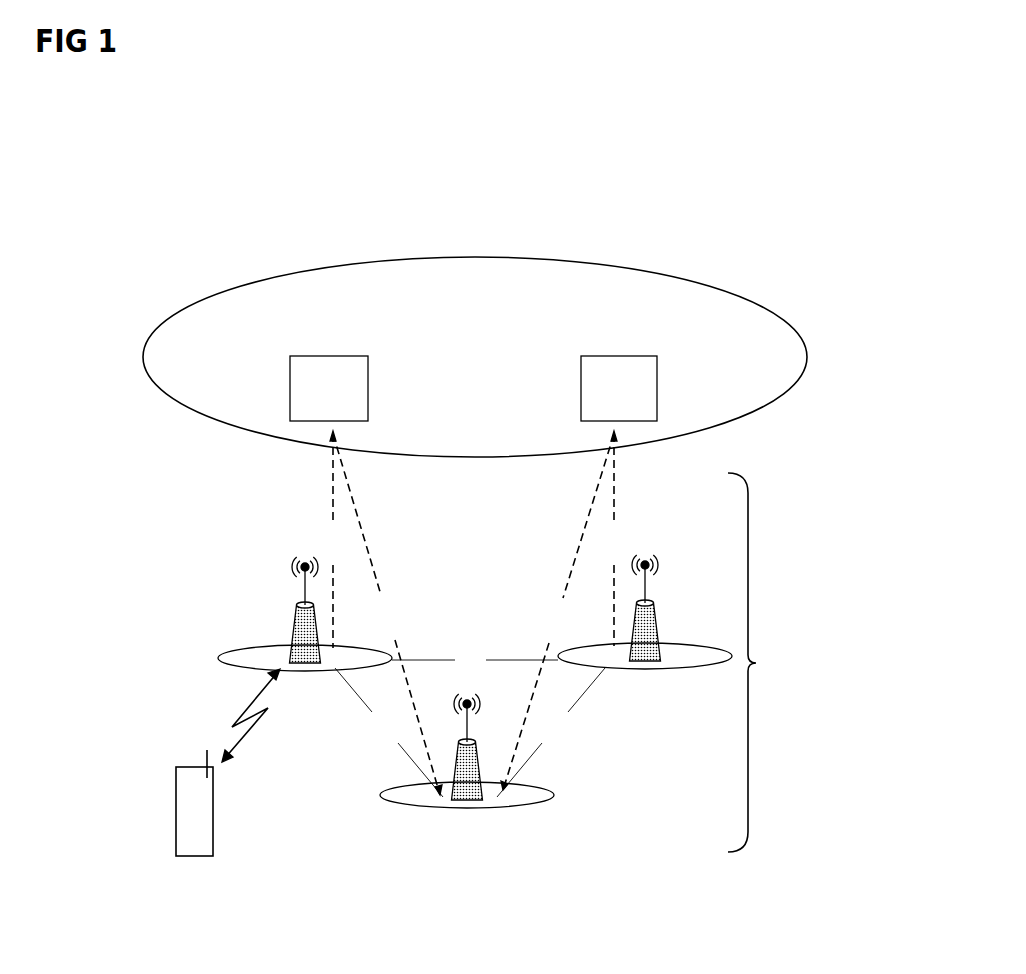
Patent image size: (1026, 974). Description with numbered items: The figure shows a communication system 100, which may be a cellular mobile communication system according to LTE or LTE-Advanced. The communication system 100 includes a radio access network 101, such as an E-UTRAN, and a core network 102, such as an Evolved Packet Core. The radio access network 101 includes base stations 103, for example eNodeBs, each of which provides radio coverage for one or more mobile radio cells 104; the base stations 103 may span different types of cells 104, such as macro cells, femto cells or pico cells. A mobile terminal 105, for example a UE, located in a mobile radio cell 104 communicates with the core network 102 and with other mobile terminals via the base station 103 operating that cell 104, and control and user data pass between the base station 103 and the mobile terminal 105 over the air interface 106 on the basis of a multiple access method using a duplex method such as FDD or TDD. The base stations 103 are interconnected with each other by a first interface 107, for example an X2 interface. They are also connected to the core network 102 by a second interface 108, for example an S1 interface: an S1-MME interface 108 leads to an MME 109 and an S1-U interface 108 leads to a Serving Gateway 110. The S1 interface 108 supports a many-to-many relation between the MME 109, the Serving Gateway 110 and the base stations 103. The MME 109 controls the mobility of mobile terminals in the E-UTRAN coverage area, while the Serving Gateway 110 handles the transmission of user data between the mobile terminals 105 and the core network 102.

The communication system 100 is at (781, 188).
The radio access network 101 is at (845, 640).
The core network 102 is at (797, 335).
The base station 103 is at (296, 612).
The mobile radio cell 104 is at (233, 663).
The mobile terminal 105 is at (196, 857).
The air interface 106 is at (268, 708).
The first interface 107 is at (470, 655).
The second interface 108 is at (330, 494).
The MME 109 is at (328, 355).
The Serving Gateway 110 is at (620, 355).